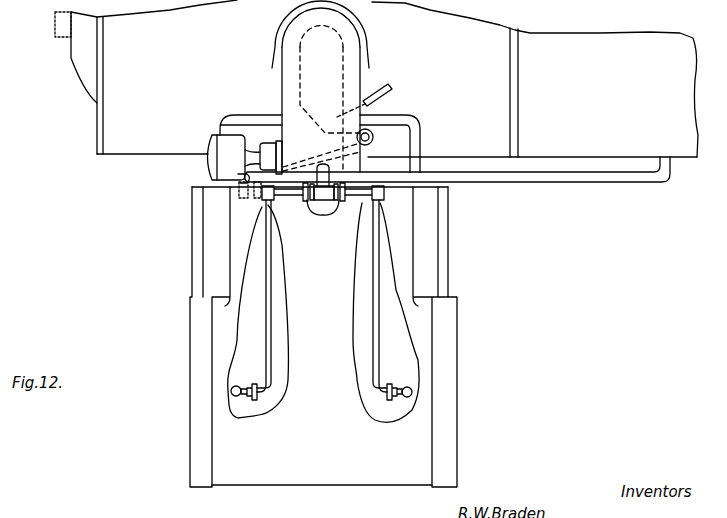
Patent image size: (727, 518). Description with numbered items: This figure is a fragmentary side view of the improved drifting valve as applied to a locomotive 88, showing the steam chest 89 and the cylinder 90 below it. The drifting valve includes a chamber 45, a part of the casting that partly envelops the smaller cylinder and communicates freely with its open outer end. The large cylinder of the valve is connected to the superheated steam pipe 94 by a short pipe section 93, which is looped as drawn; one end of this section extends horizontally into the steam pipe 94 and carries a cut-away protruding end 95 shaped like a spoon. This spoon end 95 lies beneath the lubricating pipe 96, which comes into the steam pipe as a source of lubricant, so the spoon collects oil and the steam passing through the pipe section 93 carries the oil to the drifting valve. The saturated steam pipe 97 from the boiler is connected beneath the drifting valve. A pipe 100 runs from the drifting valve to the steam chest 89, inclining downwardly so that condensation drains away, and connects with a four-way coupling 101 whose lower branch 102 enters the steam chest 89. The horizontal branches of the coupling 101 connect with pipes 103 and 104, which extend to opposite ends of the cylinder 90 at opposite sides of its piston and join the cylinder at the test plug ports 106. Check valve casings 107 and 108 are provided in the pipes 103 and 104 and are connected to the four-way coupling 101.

The chamber 45 is at (220, 134).
The locomotive 88 is at (376, 78).
The steam chest 89 is at (423, 258).
The cylinder 90 is at (318, 473).
The pipe section 93 is at (373, 144).
The superheated steam pipe 94 is at (355, 52).
The protruding end 95 is at (300, 106).
The lubricating pipe 96 is at (393, 93).
The saturated steam pipe 97 is at (608, 178).
The pipe 100 is at (250, 192).
The four-way coupling 101 is at (323, 200).
The lower branch 102 is at (328, 205).
The pipe 103 is at (269, 347).
The pipe 104 is at (378, 320).
The test plug port 106 is at (228, 393).
The check valve casing 107 is at (306, 202).
The check valve casing 108 is at (337, 197).